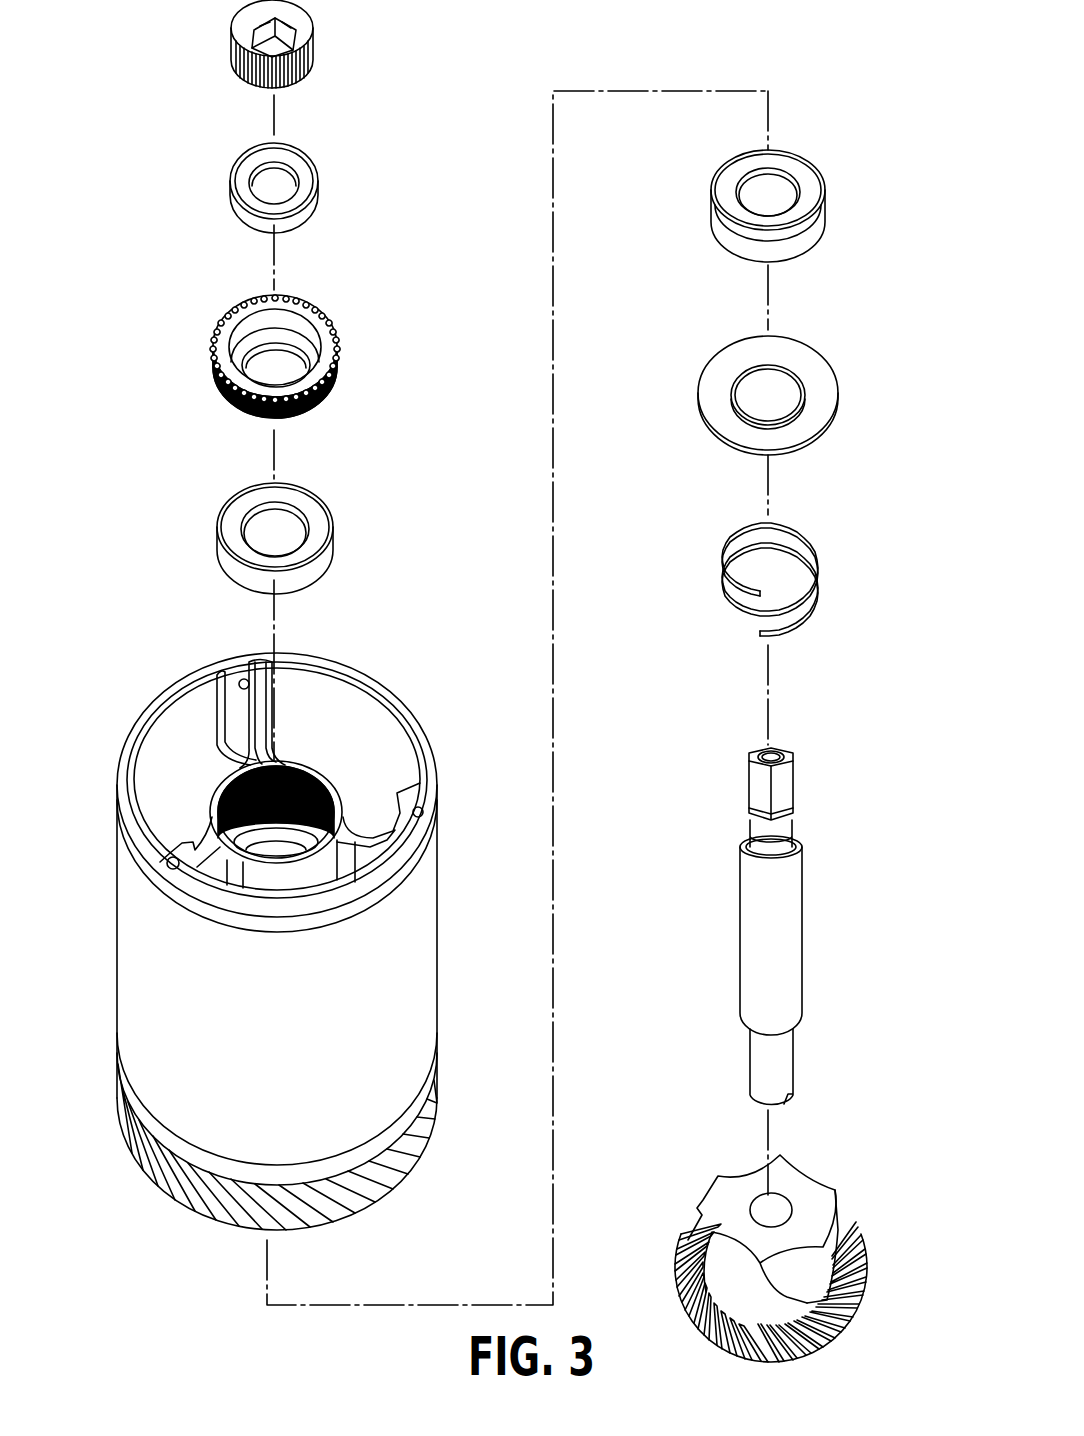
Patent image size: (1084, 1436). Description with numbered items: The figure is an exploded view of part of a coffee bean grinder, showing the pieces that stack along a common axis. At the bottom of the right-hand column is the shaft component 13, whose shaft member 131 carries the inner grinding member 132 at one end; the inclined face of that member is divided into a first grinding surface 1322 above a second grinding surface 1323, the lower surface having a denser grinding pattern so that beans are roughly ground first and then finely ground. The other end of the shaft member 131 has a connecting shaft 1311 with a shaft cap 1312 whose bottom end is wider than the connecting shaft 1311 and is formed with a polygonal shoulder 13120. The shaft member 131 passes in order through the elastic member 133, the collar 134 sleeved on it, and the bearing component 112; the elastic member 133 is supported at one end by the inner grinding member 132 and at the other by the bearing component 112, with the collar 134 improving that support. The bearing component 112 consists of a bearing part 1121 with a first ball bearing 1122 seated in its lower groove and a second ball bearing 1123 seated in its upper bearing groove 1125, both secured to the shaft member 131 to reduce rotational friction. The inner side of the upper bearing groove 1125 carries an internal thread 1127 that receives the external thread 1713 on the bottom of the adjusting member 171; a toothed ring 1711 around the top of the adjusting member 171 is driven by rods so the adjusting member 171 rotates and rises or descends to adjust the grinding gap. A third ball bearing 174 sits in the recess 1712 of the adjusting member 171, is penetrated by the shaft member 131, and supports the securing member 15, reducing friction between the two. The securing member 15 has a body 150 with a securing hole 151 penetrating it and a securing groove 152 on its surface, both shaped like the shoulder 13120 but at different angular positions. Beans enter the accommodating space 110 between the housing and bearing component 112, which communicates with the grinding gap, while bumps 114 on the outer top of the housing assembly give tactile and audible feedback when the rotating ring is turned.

The securing member 15 is at (213, 38).
The body 150 is at (237, 63).
The securing hole 151 is at (298, 24).
The securing groove 152 is at (296, 40).
The third ball bearing 174 is at (237, 182).
The adjusting member 171 is at (352, 370).
The toothed ring 1711 is at (215, 337).
The recess 1712 is at (297, 325).
The external thread 1713 is at (225, 397).
The second ball bearing 1123 is at (233, 535).
The accommodating space 110 is at (350, 727).
The bearing component 112 is at (295, 763).
The upper bearing groove 1125 is at (225, 782).
The internal thread 1127 is at (220, 808).
The bearing part 1121 is at (343, 823).
The bumps 114 is at (292, 890).
The shaft component 13 is at (680, 540).
The first ball bearing 1122 is at (803, 177).
The collar 134 is at (802, 360).
The elastic member 133 is at (805, 535).
The shaft member 131 is at (827, 902).
The shaft cap 1312 is at (767, 795).
The shoulder 13120 is at (793, 800).
The connecting shaft 1311 is at (765, 830).
The inner grinding member 132 is at (897, 1175).
The first grinding surface 1322 is at (807, 1245).
The second grinding surface 1323 is at (866, 1262).